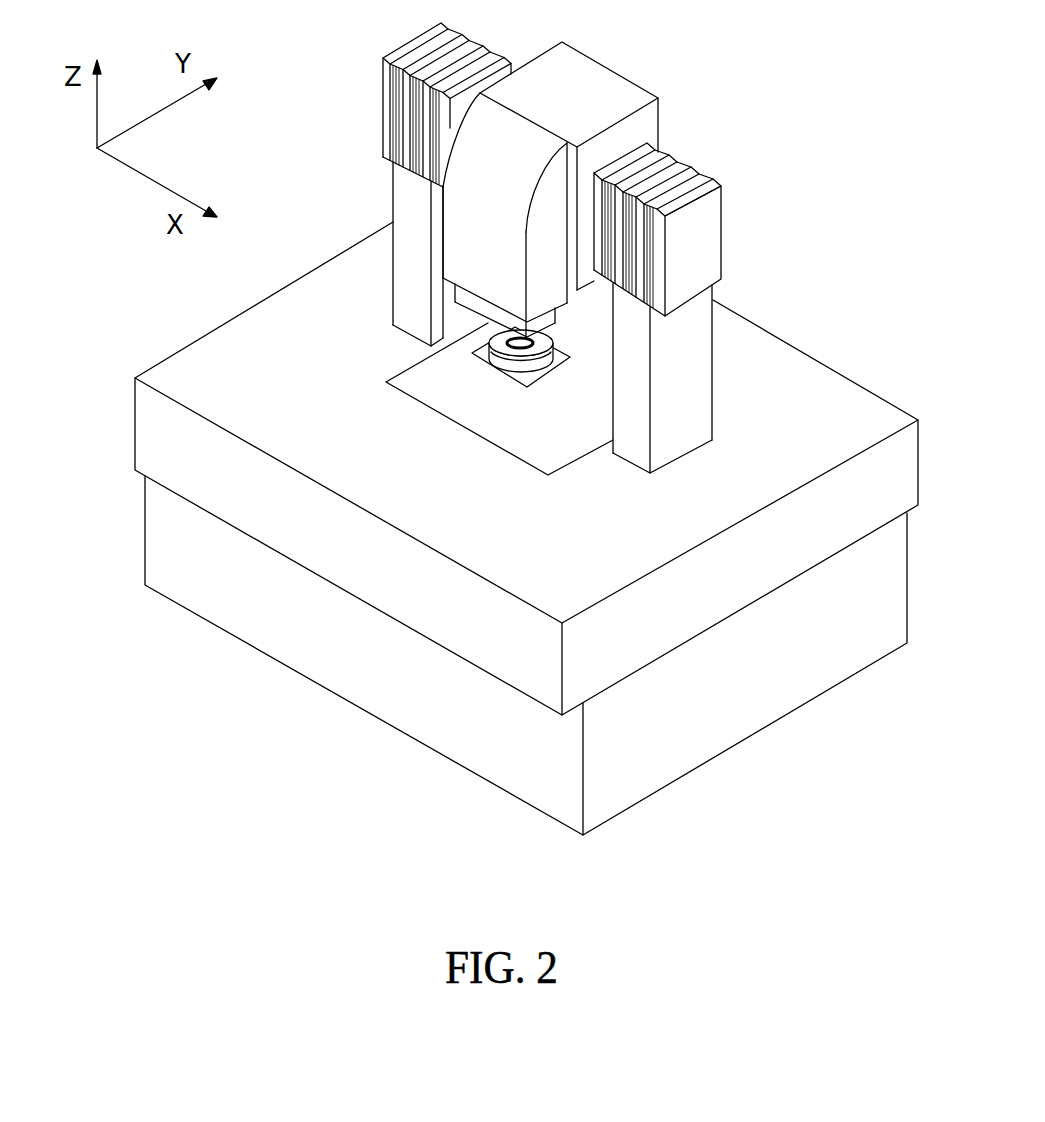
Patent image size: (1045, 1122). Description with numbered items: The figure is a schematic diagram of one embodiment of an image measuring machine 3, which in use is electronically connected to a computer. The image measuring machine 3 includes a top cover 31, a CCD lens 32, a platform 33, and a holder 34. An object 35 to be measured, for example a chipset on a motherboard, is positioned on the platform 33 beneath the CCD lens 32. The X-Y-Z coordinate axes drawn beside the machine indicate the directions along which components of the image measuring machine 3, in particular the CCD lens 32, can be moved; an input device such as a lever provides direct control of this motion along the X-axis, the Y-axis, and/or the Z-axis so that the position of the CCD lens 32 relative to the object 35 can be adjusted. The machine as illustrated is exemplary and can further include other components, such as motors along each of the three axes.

The image measuring machine 3 is at (748, 163).
The top cover 31 is at (593, 93).
The CCD lens 32 is at (487, 333).
The platform 33 is at (428, 380).
The holder 34 is at (783, 413).
The object 35 is at (522, 373).